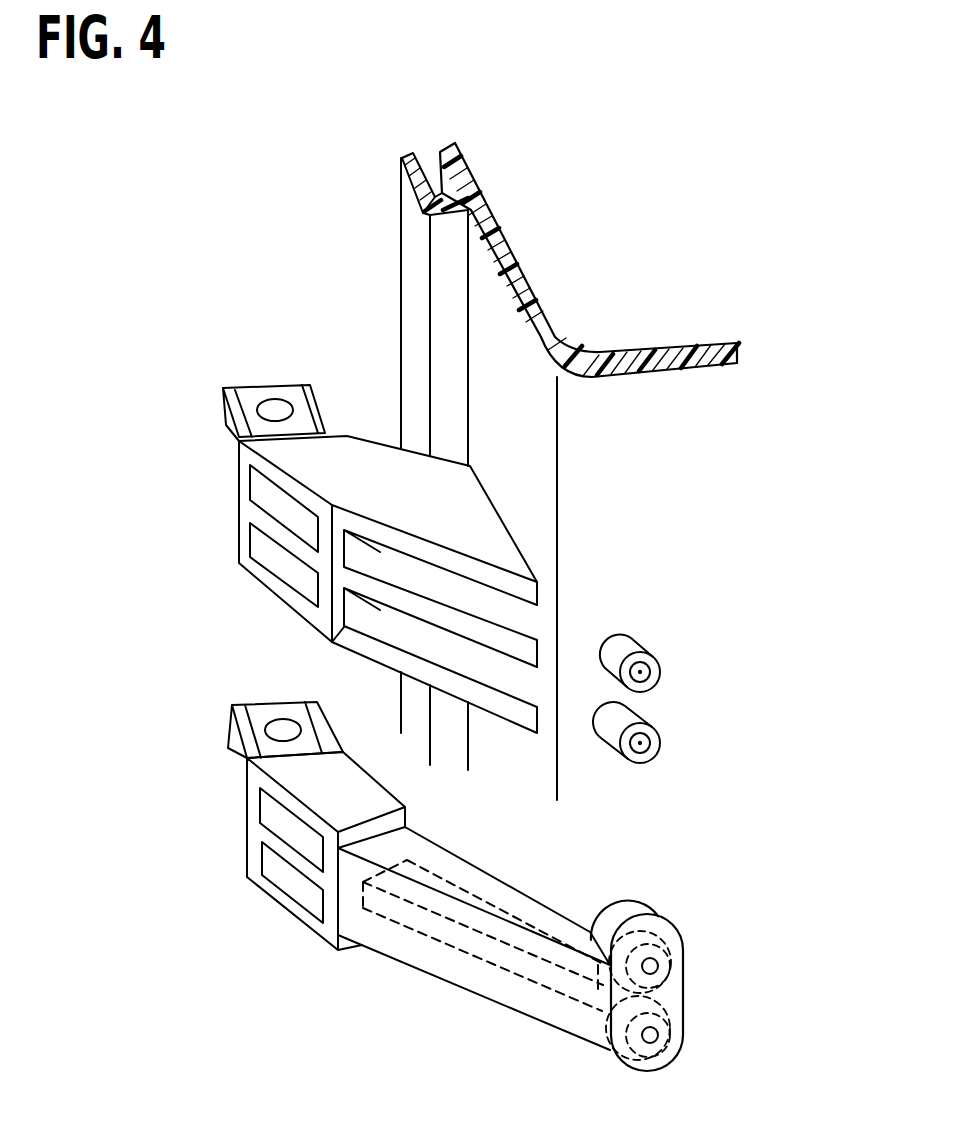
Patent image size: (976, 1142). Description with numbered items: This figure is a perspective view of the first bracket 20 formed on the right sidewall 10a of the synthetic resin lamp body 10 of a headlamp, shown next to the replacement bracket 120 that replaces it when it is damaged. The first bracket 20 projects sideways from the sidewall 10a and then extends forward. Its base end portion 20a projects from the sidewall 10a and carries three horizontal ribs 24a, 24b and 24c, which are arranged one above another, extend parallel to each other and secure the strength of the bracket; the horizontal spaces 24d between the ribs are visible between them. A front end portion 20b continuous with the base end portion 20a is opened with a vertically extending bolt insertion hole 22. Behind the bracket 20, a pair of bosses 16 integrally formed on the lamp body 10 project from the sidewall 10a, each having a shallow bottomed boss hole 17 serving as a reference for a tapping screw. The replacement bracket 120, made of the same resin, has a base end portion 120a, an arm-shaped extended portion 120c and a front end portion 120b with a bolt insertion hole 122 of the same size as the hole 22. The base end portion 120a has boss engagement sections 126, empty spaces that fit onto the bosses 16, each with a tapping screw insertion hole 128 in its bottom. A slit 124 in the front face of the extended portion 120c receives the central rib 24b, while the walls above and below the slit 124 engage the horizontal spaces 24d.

The lamp body 10 is at (657, 347).
The right sidewall 10a is at (493, 333).
The bosses 16 is at (633, 643).
The boss hole 17 is at (650, 672).
The first bracket 20 is at (224, 511).
The base end portion 20a is at (465, 548).
The front end portion 20b is at (223, 415).
The bolt insertion hole 22 is at (273, 405).
The horizontal rib 24a is at (363, 528).
The central horizontal rib 24b is at (372, 590).
The horizontal rib 24c is at (363, 647).
The horizontal spaces 24d is at (431, 580).
The replacement bracket 120 is at (400, 966).
The base end portion 120a is at (685, 998).
The front end portion 120b is at (235, 758).
The arm-shaped extended portion 120c is at (487, 868).
The bolt insertion hole 122 is at (283, 724).
The slit 124 is at (512, 978).
The boss engagement sections 126 is at (683, 957).
The tapping screw insertion hole 128 is at (652, 962).